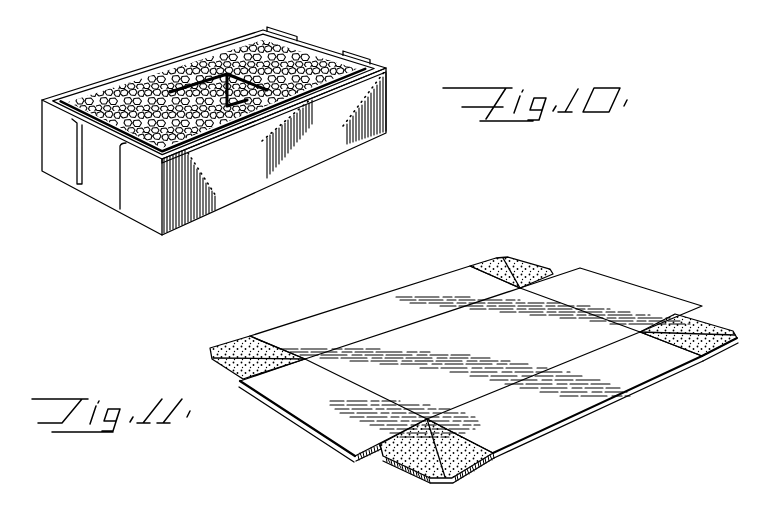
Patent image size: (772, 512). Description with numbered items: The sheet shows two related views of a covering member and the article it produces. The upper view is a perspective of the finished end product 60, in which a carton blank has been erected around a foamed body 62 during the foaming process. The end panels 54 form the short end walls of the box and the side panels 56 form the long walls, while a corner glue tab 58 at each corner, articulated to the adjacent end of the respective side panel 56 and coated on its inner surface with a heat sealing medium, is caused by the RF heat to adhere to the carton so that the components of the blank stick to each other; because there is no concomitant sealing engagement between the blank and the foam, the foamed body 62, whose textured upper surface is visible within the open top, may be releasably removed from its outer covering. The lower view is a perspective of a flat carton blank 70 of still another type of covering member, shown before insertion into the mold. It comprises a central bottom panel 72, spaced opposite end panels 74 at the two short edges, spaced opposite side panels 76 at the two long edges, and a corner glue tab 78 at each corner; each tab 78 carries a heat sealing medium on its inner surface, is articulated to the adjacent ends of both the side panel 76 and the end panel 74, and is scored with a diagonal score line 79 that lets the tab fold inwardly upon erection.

In FIG. 10, the end panel 54 is at (322, 48).
In FIG. 10, the side panel 56 is at (83, 93).
In FIG. 10, the corner glue tab 58 is at (280, 34).
In FIG. 10, the end product 60 is at (204, 129).
In FIG. 10, the foamed body 62 is at (214, 55).
In FIG. 11, the carton blank 70 is at (470, 358).
In FIG. 11, the bottom panel 72 is at (466, 344).
In FIG. 11, the end panel 74 is at (653, 287).
In FIG. 11, the side panel 76 is at (370, 296).
In FIG. 11, the corner glue tab 78 is at (521, 259).
In FIG. 11, the diagonal score line 79 is at (505, 273).